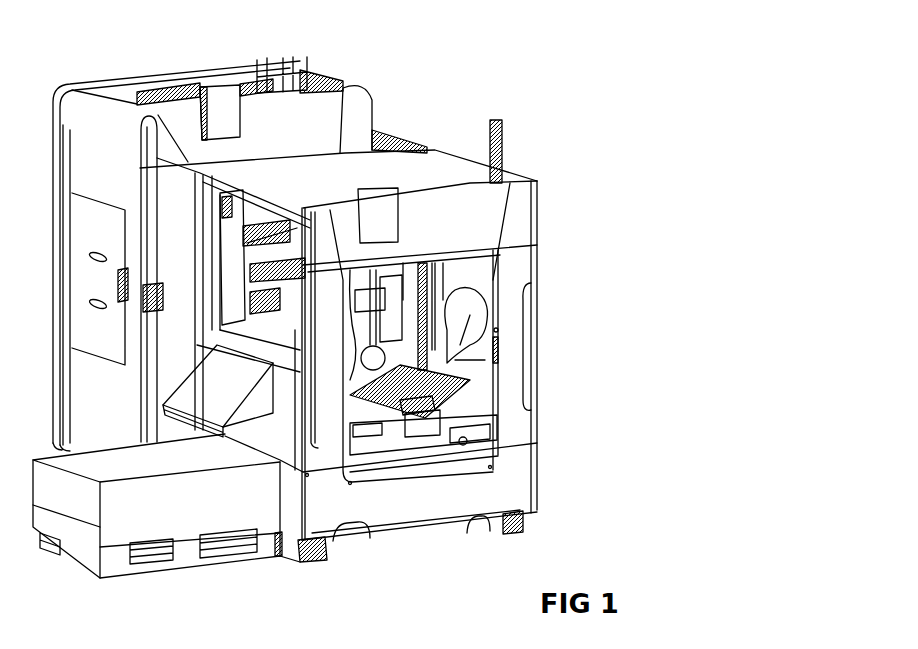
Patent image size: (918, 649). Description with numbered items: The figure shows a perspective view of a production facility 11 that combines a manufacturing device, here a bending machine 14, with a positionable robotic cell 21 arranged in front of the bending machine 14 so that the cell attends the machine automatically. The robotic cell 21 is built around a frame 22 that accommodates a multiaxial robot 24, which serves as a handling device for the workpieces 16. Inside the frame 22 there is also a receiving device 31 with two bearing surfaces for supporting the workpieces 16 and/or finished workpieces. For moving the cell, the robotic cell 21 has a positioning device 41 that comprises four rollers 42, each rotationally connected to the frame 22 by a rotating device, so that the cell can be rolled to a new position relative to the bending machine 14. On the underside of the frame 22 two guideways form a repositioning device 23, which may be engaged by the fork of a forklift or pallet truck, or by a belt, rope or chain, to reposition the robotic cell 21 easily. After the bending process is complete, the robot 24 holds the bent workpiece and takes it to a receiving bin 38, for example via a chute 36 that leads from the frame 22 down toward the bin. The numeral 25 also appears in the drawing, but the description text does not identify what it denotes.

The production facility 11 is at (565, 88).
The bending machine 14 is at (333, 110).
The workpieces 16 is at (445, 402).
The positionable robotic cell 21 is at (547, 367).
The frame 22 is at (513, 323).
The repositioning device 23 is at (362, 537).
The robot 24 is at (365, 318).
The base 25 is at (328, 645).
The receiving device 31 is at (423, 432).
The chute 36 is at (240, 430).
The receiving bin 38 is at (127, 517).
The positioning device 41 is at (291, 560).
The rollers 42 is at (303, 562).